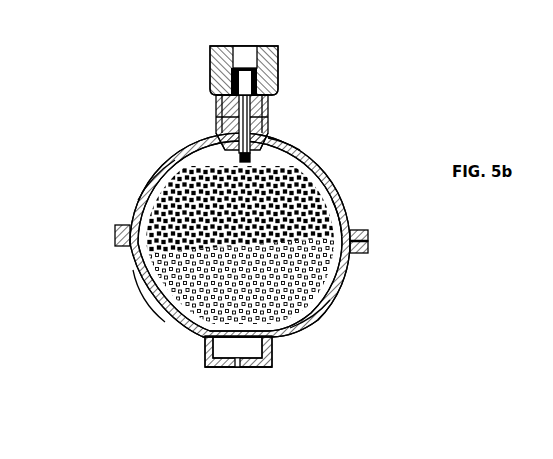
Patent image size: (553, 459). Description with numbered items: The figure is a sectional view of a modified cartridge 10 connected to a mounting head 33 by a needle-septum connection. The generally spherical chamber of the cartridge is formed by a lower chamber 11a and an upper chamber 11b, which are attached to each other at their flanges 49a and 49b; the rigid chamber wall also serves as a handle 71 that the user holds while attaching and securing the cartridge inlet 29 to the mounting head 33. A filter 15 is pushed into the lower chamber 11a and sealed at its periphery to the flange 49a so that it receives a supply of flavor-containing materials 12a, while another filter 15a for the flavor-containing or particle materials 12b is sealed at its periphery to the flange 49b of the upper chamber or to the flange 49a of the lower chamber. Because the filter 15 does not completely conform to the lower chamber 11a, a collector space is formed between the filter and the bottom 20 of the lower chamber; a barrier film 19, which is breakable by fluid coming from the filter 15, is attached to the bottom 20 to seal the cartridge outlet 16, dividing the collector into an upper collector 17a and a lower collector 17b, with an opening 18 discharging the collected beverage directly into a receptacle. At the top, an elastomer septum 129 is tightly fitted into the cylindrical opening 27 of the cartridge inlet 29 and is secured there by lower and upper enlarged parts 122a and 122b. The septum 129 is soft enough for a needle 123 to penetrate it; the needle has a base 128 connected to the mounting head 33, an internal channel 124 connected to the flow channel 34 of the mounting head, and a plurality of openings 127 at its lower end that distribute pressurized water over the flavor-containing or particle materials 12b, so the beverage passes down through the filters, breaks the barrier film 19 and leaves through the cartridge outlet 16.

The cartridge 10 is at (378, 124).
The lower chamber 11a is at (137, 280).
The upper chamber 11b is at (143, 190).
The flavor-containing materials 12a is at (303, 276).
The flavor-containing or particle materials 12b is at (318, 195).
The filter 15 is at (277, 318).
The filter 15a is at (192, 238).
The cartridge outlet 16 is at (283, 369).
The upper collector 17a is at (315, 323).
The lower collector 17b is at (248, 347).
The opening 18 is at (238, 362).
The barrier film 19 is at (212, 341).
The bottom 20 is at (180, 322).
The cylindrical opening 27 is at (216, 128).
The cartridge inlet 29 is at (284, 127).
The mounting head 33 is at (292, 46).
The flow channel 34 is at (240, 57).
The flange 49a is at (366, 250).
The flange 49b is at (358, 230).
The handle 71 is at (342, 222).
The lower enlarged part 122a is at (296, 145).
The upper enlarged part 122b is at (262, 102).
The needle 123 is at (216, 121).
The channel 124 is at (216, 100).
The openings 127 is at (240, 160).
The base 128 is at (276, 71).
The elastomer septum 129 is at (264, 115).